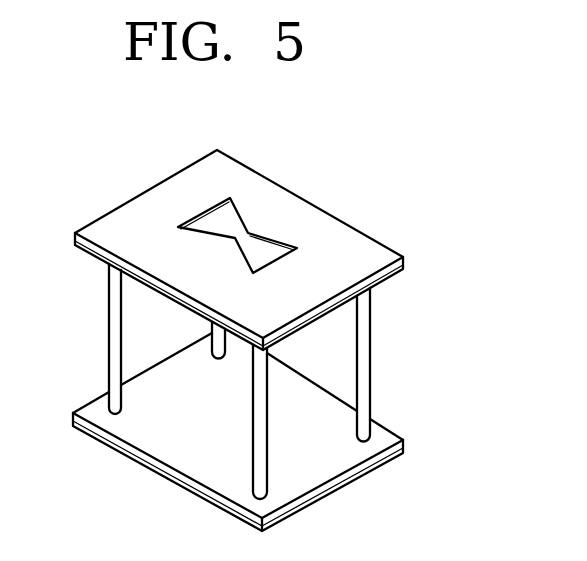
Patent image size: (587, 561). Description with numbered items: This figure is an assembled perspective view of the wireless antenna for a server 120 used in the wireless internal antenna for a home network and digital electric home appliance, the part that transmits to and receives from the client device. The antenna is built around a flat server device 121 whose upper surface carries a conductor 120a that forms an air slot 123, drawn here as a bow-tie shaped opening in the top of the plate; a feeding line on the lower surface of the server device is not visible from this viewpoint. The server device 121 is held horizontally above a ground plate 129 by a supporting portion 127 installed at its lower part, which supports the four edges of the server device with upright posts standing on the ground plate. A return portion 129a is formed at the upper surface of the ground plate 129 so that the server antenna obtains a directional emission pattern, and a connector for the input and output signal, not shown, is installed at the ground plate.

The wireless antenna for a server 120 is at (406, 204).
The conductor 120a is at (167, 193).
The server device 121 is at (405, 267).
The air slot 123 is at (228, 222).
The supporting portion 127 is at (371, 365).
The ground plate 129 is at (345, 488).
The return portion 129a is at (313, 464).